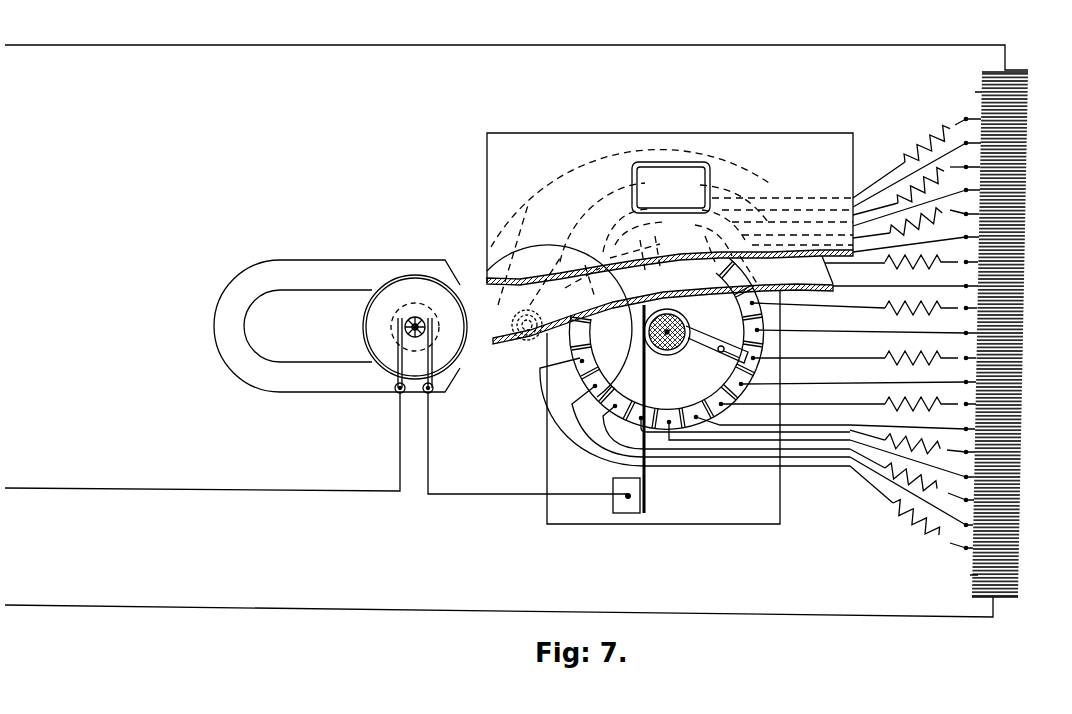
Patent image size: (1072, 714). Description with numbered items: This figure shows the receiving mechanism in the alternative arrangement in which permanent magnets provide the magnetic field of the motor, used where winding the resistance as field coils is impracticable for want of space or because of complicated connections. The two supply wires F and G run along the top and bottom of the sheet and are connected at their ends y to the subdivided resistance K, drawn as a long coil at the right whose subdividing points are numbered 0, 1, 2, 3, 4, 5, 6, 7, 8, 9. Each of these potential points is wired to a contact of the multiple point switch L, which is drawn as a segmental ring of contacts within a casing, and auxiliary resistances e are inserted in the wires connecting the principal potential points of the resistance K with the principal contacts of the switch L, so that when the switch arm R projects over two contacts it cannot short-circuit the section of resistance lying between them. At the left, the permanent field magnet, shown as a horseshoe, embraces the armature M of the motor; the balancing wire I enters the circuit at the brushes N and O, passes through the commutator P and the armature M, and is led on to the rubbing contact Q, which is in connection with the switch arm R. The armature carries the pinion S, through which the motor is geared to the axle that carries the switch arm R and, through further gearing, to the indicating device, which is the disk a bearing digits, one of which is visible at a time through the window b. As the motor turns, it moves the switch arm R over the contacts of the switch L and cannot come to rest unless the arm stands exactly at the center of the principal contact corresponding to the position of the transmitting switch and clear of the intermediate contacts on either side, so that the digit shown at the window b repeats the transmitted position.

The supply wire F is at (516, 52).
The supply wire G is at (104, 605).
The line wire I is at (43, 488).
The armature M is at (337, 312).
The pinion S is at (420, 318).
The commutator P is at (416, 318).
The brush N is at (399, 393).
The brush O is at (430, 393).
The indicating disk a is at (555, 321).
The window b is at (653, 178).
The rubbing contact Q is at (644, 357).
The switch arm R is at (708, 350).
The multiple point switch L is at (757, 525).
The subdivided resistance K is at (1022, 288).
The comb terminal y is at (963, 333).
The auxiliary resistance e is at (908, 342).
The subdividing point 0 is at (1038, 548).
The subdividing point 1 is at (704, 243).
The subdividing point 2 is at (523, 296).
The subdividing point 3 is at (576, 215).
The subdividing point 4 is at (1038, 358).
The subdividing point 5 is at (754, 217).
The subdividing point 6 is at (1038, 262).
The subdividing point 7 is at (1038, 214).
The subdividing point 8 is at (1038, 167).
The subdividing point 9 is at (1038, 119).